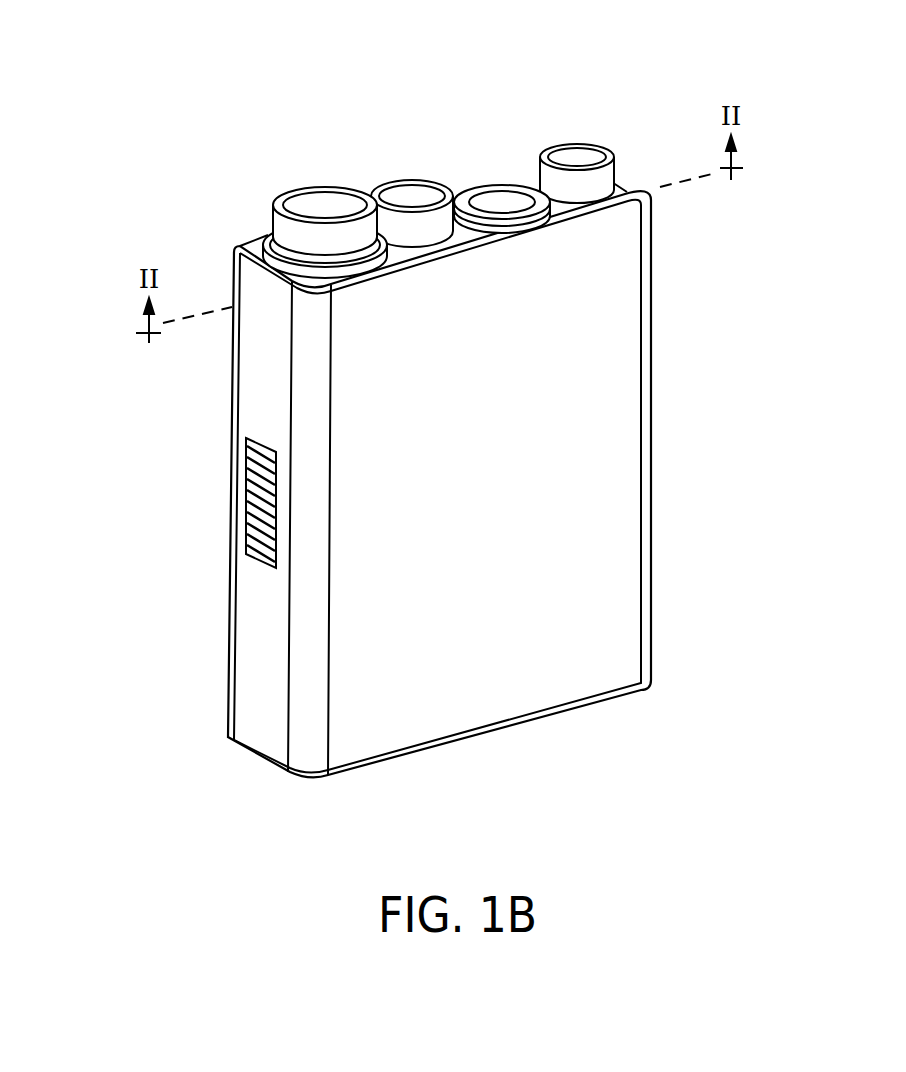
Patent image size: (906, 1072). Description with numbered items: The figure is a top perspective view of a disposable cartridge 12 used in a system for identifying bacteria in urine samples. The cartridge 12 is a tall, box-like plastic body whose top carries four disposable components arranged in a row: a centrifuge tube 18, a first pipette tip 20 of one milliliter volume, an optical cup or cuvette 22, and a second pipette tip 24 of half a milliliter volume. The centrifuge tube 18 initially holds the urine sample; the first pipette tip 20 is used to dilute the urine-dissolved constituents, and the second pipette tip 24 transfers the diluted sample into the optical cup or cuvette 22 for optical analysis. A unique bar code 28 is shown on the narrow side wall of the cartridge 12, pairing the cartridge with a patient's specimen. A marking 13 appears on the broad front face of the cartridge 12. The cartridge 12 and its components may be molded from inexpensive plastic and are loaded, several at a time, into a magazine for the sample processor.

The disposable cartridge 12 is at (652, 472).
The front wall 13 is at (460, 484).
The centrifuge tube 18 is at (270, 230).
The first pipette tip 20 is at (380, 182).
The optical cup or cuvette 22 is at (480, 183).
The second pipette tip 24 is at (592, 145).
The bar code 28 is at (230, 513).